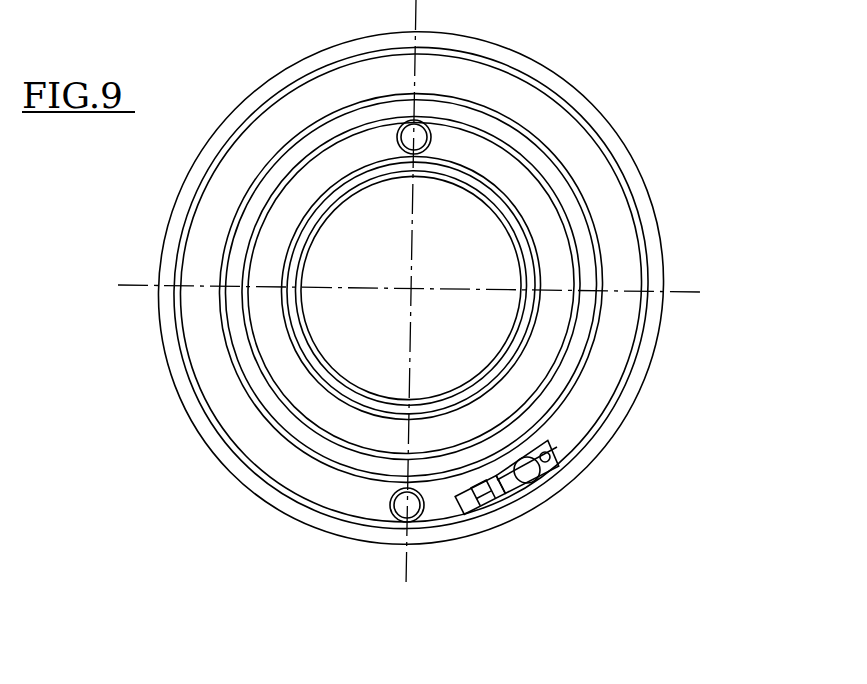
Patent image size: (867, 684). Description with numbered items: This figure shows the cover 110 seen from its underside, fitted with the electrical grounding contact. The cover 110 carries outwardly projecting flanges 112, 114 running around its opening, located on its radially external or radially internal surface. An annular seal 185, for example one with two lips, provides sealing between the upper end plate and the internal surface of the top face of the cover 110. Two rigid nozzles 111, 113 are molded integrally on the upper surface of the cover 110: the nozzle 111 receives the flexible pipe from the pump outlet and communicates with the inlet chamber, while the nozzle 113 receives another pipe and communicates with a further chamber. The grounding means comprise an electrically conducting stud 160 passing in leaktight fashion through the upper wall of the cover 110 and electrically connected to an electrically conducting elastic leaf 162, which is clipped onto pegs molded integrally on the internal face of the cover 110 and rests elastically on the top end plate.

The cover 110 is at (529, 63).
The rigid nozzle 111 is at (404, 507).
The outwardly projecting flange 112 is at (637, 386).
The rigid nozzle 113 is at (411, 131).
The outwardly projecting flange 114 is at (513, 353).
The electrically conducting stud 160 is at (539, 490).
The elastic leaf 162 is at (497, 500).
The annular seal 185 is at (602, 270).